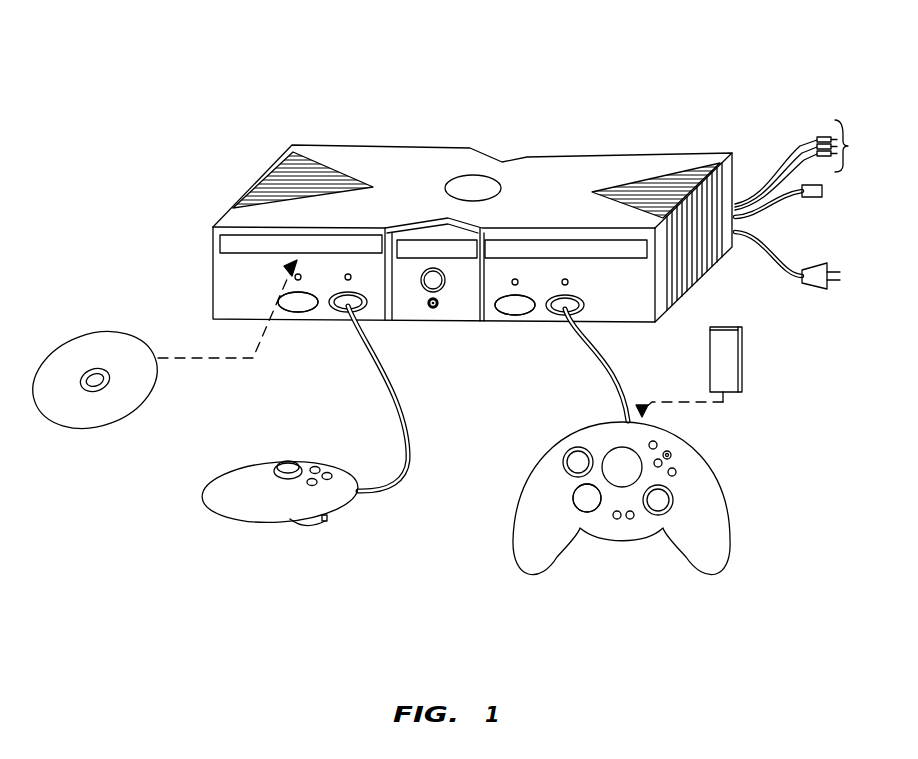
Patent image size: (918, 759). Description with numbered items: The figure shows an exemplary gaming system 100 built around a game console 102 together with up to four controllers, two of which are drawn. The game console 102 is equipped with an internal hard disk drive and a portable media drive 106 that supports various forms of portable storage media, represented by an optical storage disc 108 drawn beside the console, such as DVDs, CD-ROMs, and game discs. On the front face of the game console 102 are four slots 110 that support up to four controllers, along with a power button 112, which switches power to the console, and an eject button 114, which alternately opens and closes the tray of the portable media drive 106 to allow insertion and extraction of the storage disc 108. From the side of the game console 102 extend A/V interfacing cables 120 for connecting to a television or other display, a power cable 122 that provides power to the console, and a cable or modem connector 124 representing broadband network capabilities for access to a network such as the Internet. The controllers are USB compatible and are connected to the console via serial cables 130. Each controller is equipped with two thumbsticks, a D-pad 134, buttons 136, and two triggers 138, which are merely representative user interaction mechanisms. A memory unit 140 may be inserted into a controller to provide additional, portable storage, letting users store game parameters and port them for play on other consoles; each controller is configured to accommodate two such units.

The gaming system 100 is at (643, 84).
The game console 102 is at (333, 143).
The portable media drive 106 is at (232, 243).
The optical storage disc 108 is at (105, 422).
The slots 110 is at (338, 318).
The power button 112 is at (432, 309).
The eject button 114 is at (433, 268).
The A/V interfacing cables 120 is at (800, 137).
The power cable 122 is at (790, 277).
The cable or modem connector 124 is at (773, 205).
The serial cables 130 is at (392, 408).
The D-pad 134 is at (573, 500).
The buttons 136 is at (671, 455).
The triggers 138 is at (328, 521).
The memory unit 140 is at (743, 358).